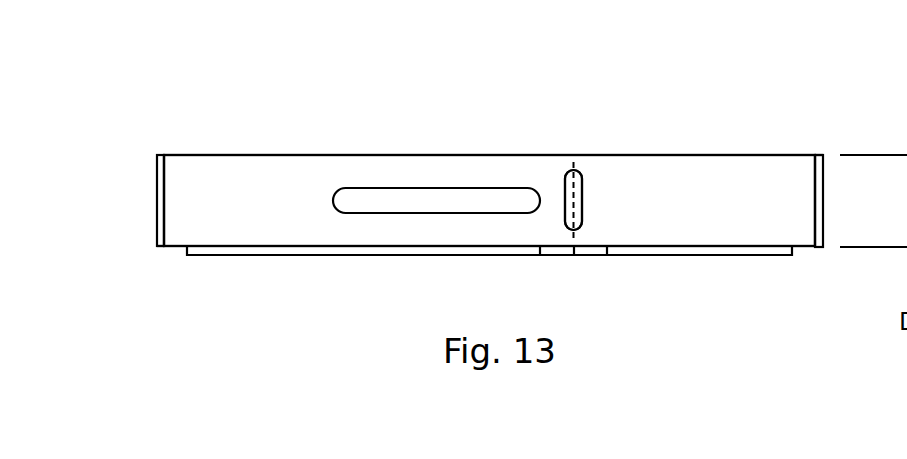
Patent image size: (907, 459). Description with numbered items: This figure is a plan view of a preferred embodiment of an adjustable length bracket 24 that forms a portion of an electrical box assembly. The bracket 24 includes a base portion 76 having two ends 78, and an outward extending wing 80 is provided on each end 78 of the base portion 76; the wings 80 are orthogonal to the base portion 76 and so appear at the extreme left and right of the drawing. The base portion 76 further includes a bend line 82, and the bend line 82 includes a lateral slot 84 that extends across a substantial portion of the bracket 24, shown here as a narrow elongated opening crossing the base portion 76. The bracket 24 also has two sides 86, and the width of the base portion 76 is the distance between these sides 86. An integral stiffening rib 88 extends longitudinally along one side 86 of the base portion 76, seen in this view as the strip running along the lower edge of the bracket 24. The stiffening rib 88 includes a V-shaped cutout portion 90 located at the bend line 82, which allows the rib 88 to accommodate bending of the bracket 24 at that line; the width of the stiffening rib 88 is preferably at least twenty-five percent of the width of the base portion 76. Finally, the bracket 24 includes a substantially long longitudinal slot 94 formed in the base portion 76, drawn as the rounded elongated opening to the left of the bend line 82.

The adjustable bracket 24 is at (278, 120).
The base portion 76 is at (522, 181).
The ends 78 is at (157, 197).
The outward extending wing 80 is at (160, 247).
The bend line 82 is at (573, 155).
The lateral slot 84 is at (582, 200).
The sides 86 is at (489, 155).
The stiffening rib 88 is at (668, 256).
The V-shaped cutout portion 90 is at (587, 256).
The longitudinal slot 94 is at (437, 198).